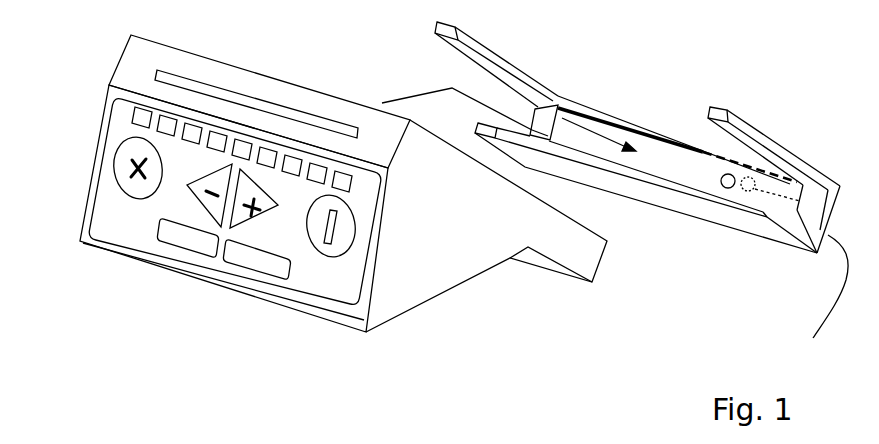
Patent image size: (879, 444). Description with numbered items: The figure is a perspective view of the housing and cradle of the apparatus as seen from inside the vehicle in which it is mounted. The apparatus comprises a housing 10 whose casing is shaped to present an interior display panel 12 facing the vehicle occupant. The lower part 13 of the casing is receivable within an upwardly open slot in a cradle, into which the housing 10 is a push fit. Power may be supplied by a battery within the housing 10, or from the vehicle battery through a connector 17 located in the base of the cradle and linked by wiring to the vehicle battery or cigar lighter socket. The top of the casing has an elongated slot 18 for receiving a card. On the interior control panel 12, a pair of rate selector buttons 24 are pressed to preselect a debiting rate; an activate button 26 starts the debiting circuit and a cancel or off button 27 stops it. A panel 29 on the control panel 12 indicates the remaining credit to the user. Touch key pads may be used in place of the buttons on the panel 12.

The housing 10 is at (448, 260).
The interior display panel 12 is at (322, 287).
The lower part of the casing 13 is at (540, 257).
The connector 17 is at (725, 188).
The elongated slot 18 is at (250, 100).
The rate selector buttons 24 is at (193, 185).
The activate button 26 is at (317, 250).
The cancel button 27 is at (122, 170).
The panel 29 is at (198, 253).